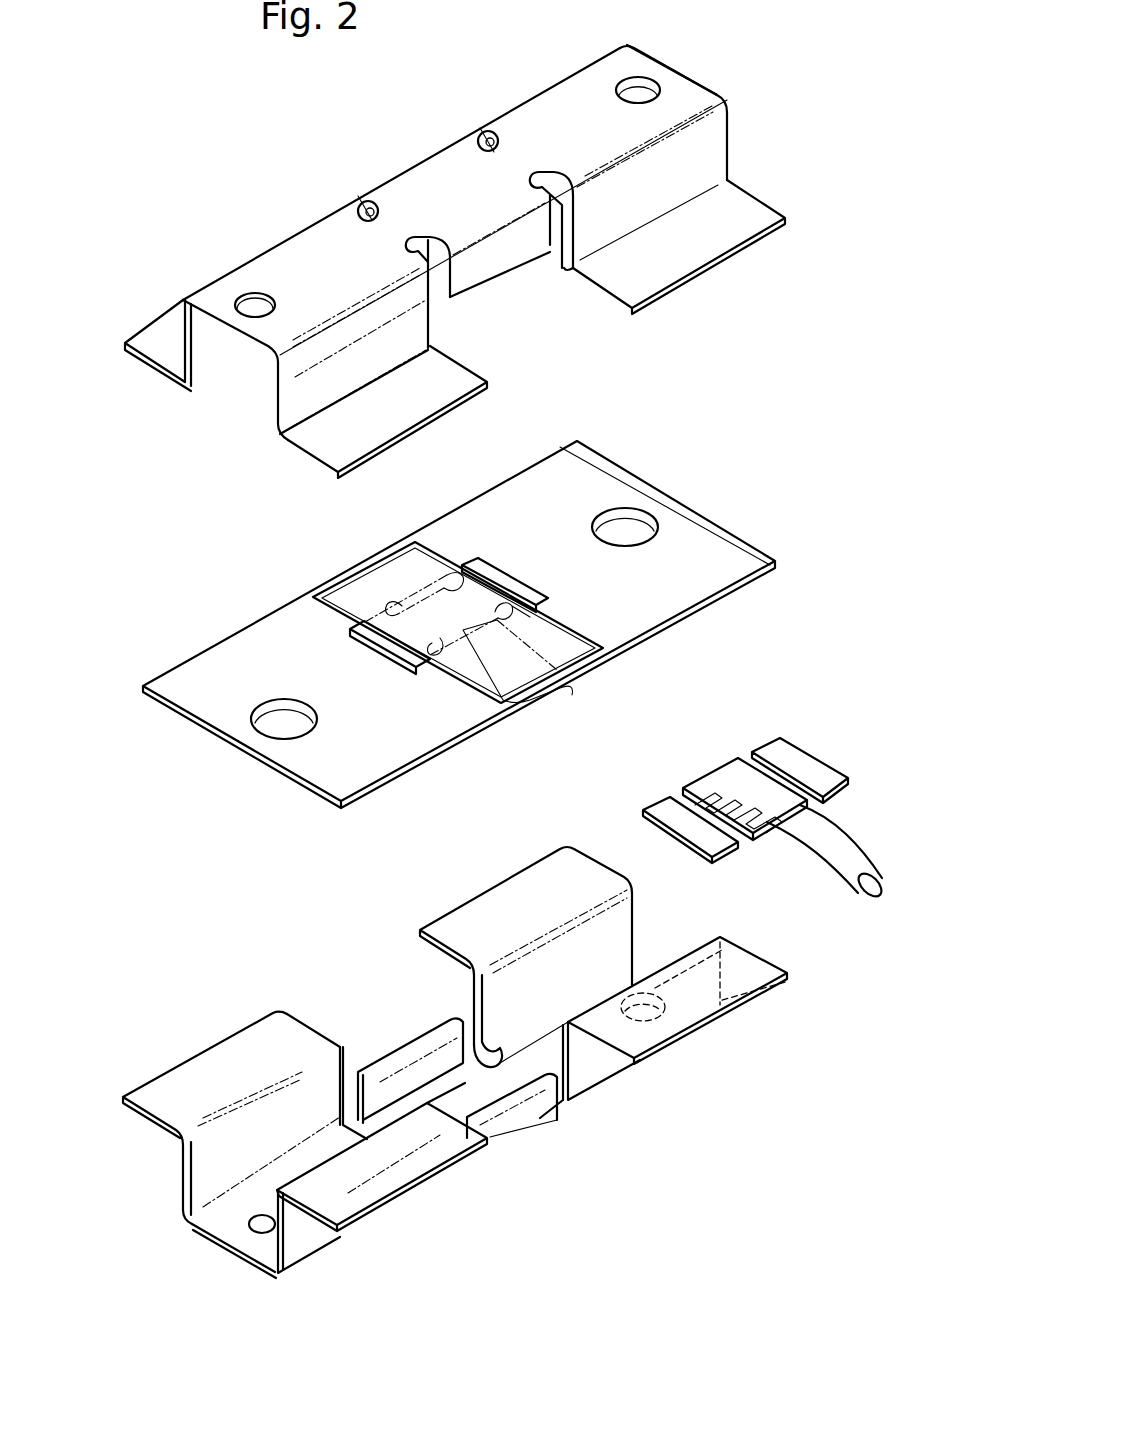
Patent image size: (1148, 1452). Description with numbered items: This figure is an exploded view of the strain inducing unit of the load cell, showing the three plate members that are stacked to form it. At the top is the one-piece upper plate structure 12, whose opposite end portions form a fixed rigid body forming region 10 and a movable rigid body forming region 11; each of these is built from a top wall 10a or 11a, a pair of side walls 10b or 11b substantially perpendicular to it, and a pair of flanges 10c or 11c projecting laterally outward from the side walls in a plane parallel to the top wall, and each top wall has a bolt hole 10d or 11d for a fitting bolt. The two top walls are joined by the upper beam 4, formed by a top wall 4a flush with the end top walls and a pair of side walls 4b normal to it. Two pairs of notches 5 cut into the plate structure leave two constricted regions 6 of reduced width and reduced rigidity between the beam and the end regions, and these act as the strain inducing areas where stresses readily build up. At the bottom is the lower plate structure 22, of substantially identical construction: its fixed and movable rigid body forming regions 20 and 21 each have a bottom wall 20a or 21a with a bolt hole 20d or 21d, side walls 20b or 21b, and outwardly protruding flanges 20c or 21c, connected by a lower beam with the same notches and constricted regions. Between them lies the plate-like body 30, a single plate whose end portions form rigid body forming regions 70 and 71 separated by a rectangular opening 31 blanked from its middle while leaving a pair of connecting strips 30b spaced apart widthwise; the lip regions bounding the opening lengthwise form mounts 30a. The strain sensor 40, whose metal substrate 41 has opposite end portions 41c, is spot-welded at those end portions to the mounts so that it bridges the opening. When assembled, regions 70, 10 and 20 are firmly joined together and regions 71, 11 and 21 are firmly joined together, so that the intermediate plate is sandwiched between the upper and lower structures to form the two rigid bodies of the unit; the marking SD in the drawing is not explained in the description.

The upper plate structure 12 is at (292, 137).
The upper beam 4 is at (386, 188).
The top wall 4a is at (442, 200).
The side walls 4b is at (477, 255).
The notches 5 is at (488, 130).
The constricted regions 6 is at (516, 163).
The fixed rigid body forming region 10 is at (680, 90).
The top wall 10a is at (630, 62).
The side walls 10b is at (700, 152).
The flanges 10c is at (718, 225).
The bolt hole 10d is at (648, 88).
The movable rigid body forming region 11 is at (205, 290).
The top wall 11a is at (293, 272).
The side walls 11b is at (300, 372).
The flanges 11c is at (173, 343).
The bolt hole 11d is at (258, 300).
The plate-like body 30 is at (660, 495).
The mounts 30a is at (493, 563).
The connecting strips 30b is at (352, 572).
The rectangular opening 31 is at (375, 600).
The strain sensor 40 is at (517, 575).
The substrate 41 is at (823, 778).
The end portions 41c is at (810, 752).
The rigid body forming region 70 is at (705, 530).
The rigid body forming region 71 is at (315, 763).
The lower plate structure 22 is at (346, 965).
The fixed rigid body forming region 20 is at (685, 1043).
The bottom wall 20a is at (630, 977).
The side walls 20b is at (603, 933).
The flanges 20c is at (525, 893).
The bolt hole 20d is at (712, 955).
The movable rigid body forming region 21 is at (327, 1233).
The bottom wall 21a is at (263, 1265).
The side walls 21b is at (270, 1248).
The flanges 21c is at (225, 1070).
The bolt hole 21d is at (264, 1222).
The sliding direction SD is at (656, 1127).